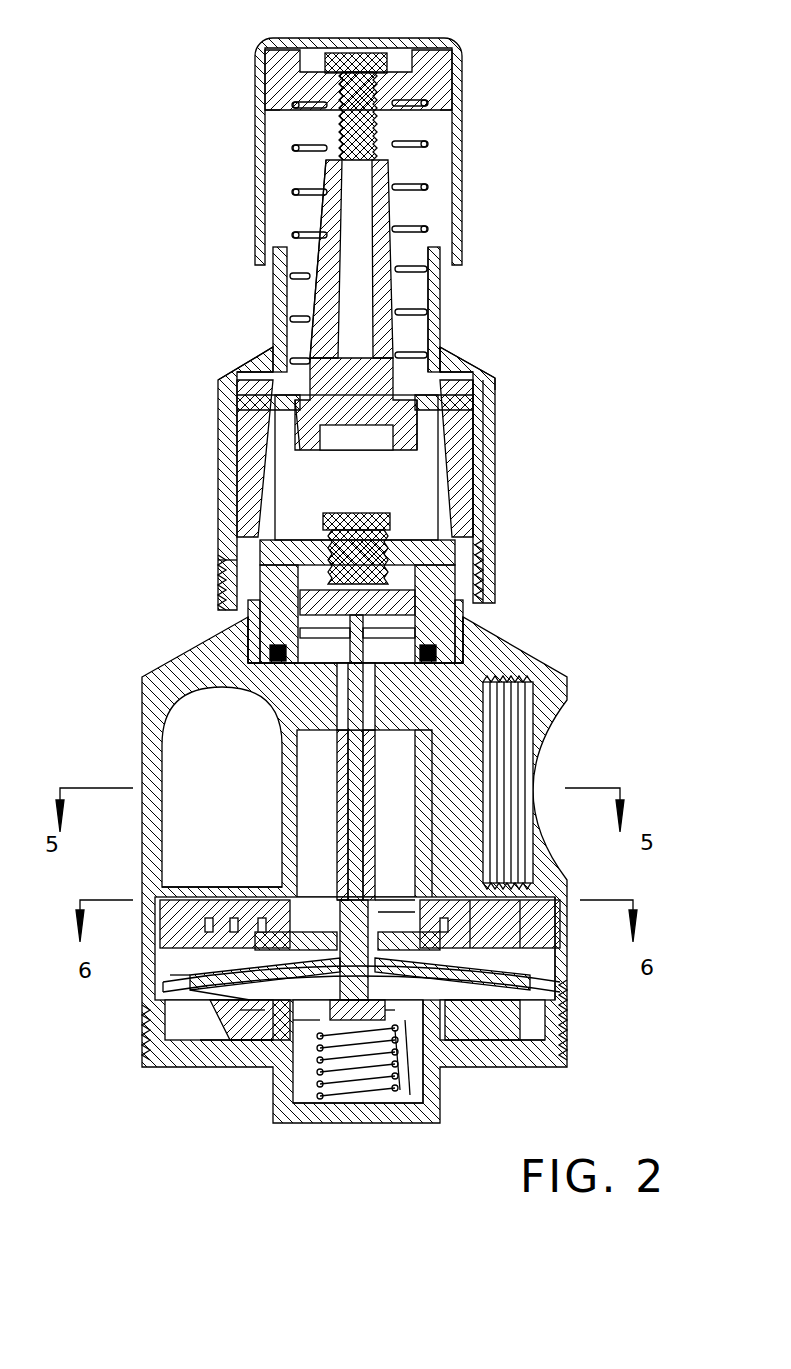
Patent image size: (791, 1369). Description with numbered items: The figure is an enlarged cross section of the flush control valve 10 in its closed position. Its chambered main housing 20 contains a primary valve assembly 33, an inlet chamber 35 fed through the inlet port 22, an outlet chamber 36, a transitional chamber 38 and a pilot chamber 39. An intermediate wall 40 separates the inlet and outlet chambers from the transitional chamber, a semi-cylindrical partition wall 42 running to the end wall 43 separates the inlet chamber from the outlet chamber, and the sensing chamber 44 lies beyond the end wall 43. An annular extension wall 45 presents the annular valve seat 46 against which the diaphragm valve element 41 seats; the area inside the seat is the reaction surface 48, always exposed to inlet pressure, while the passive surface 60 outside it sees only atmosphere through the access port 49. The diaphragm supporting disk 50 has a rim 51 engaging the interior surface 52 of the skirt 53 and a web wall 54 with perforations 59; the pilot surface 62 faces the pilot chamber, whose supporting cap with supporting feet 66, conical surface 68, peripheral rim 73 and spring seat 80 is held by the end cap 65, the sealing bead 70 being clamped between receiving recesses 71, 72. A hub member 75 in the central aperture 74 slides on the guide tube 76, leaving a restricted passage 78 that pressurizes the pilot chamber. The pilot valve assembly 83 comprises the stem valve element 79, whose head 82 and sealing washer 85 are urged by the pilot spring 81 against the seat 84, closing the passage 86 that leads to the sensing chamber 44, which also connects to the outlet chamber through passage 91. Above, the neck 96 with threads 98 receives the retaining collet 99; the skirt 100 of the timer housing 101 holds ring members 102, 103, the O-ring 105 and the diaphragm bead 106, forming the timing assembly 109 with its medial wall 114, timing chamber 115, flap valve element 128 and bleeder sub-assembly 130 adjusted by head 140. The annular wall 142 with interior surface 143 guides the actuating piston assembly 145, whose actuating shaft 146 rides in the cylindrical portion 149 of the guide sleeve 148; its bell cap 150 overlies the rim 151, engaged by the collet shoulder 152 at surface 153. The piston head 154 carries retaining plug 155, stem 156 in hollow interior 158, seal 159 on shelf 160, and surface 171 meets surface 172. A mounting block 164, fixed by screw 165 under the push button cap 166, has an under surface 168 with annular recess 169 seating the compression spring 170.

The flush control valve 10 is at (548, 336).
The main housing 20 is at (150, 697).
The inlet port 22 is at (533, 706).
The primary valve assembly 33 is at (445, 1075).
The inlet chamber 35 is at (392, 778).
The outlet chamber 36 is at (190, 718).
The transitional chamber 38 is at (202, 920).
The pilot chamber 39 is at (490, 940).
The intermediate wall 40 is at (272, 930).
The diaphragm valve element 41 is at (440, 900).
The semi-cylindrical partition wall 42 is at (282, 748).
The end wall 43 is at (410, 681).
The sensing chamber 44 is at (420, 636).
The annular extension wall 45 is at (400, 880).
The annular valve seat 46 is at (400, 910).
The inlet flush fluid reaction surface 48 is at (285, 920).
The access port 49 is at (162, 870).
The diaphragm supporting disk 50 is at (500, 936).
The annular rim 51 is at (520, 912).
The cylindrical interior surface 52 is at (190, 925).
The skirt 53 is at (565, 1065).
The web wall 54 is at (540, 880).
The perforations 59 is at (234, 930).
The passive surface 60 is at (215, 940).
The pilot surface 62 is at (193, 1067).
The end cap 65 is at (460, 1070).
The supporting feet 66 is at (410, 1100).
The conical surface 68 is at (400, 1100).
The sealing bead 70 is at (535, 967).
The receiving recess 71 is at (240, 960).
The receiving recess 72 is at (190, 1020).
The peripheral rim 73 is at (540, 1068).
The central aperture 74 is at (228, 1067).
The hub member 75 is at (318, 905).
The guide tube 76 is at (376, 764).
The restricted passage 78 is at (332, 880).
The stem valve element 79 is at (318, 1113).
The spring seat 80 is at (310, 1080).
The pilot spring 81 is at (342, 1108).
The head 82 is at (290, 1040).
The pilot valve assembly 83 is at (372, 1080).
The seat 84 is at (368, 1090).
The sealing washer 85 is at (254, 1067).
The passage 86 is at (346, 763).
The passage 91 is at (288, 708).
The neck 96 is at (472, 582).
The threads 98 is at (224, 560).
The retaining collet 99 is at (483, 462).
The skirt 100 is at (252, 641).
The timer housing 101 is at (457, 511).
The ring member 102 is at (452, 641).
The ring member 103 is at (280, 601).
The O-ring 105 is at (240, 661).
The bead 106 is at (405, 641).
The timing assembly 109 is at (470, 484).
The medial wall 114 is at (408, 541).
The timing chamber 115 is at (300, 584).
The flap valve element 128 is at (222, 572).
The bleeder sub-assembly 130 is at (353, 506).
The head 140 is at (337, 503).
The annular wall 142 is at (484, 443).
The interior surface 143 is at (258, 482).
The actuating piston assembly 145 is at (312, 341).
The actuating shaft 146 is at (385, 256).
The guide sleeve 148 is at (427, 330).
The hollow cylindrical portion 149 is at (440, 284).
The bell cap 150 is at (448, 386).
The uppermost rim 151 is at (445, 406).
The interior shoulder 152 is at (253, 366).
The surface 153 is at (447, 372).
The piston head 154 is at (267, 393).
The retaining plug 155 is at (357, 420).
The stem 156 is at (360, 358).
The hollow interior 158 is at (333, 312).
The seal 159 is at (420, 441).
The shelf 160 is at (300, 410).
The push button mounting block 164 is at (442, 79).
The screw 165 is at (386, 52).
The push button cap 166 is at (256, 92).
The under surface 168 is at (268, 130).
The annular recess 169 is at (452, 120).
The compression spring 170 is at (292, 192).
The surface 171 is at (433, 372).
The surface 172 is at (318, 432).